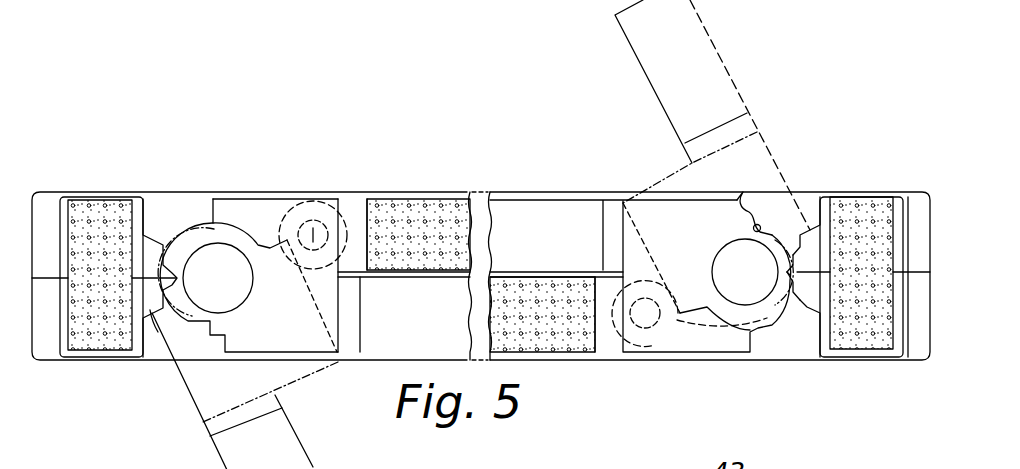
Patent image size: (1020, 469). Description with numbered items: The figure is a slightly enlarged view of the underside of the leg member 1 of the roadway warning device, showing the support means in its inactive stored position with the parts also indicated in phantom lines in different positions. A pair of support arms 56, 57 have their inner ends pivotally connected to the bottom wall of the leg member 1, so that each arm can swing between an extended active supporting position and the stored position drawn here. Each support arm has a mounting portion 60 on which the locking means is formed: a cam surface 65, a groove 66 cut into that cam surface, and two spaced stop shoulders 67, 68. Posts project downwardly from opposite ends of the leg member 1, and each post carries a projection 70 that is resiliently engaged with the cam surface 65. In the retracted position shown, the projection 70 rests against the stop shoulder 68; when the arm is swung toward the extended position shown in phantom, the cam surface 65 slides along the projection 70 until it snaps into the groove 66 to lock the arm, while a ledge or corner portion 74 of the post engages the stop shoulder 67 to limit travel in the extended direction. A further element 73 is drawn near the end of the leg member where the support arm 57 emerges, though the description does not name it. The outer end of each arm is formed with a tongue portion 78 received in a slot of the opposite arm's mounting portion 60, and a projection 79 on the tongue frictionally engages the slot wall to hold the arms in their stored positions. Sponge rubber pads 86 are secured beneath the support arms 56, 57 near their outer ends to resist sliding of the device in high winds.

The leg member 1 is at (216, 186).
The support arm 56 is at (722, 90).
The support arm 57 is at (236, 391).
The mounting portion 60 is at (712, 332).
The cam surface 65 is at (770, 238).
The groove 66 is at (752, 227).
The stop shoulder 67 is at (744, 190).
The stop shoulder 68 is at (792, 278).
The projection 70 is at (788, 268).
The hook 73 is at (160, 318).
The ledge or corner portion 74 is at (861, 273).
The tongue portion 78 is at (348, 210).
The projection 79 is at (313, 222).
The pad 86 is at (406, 205).